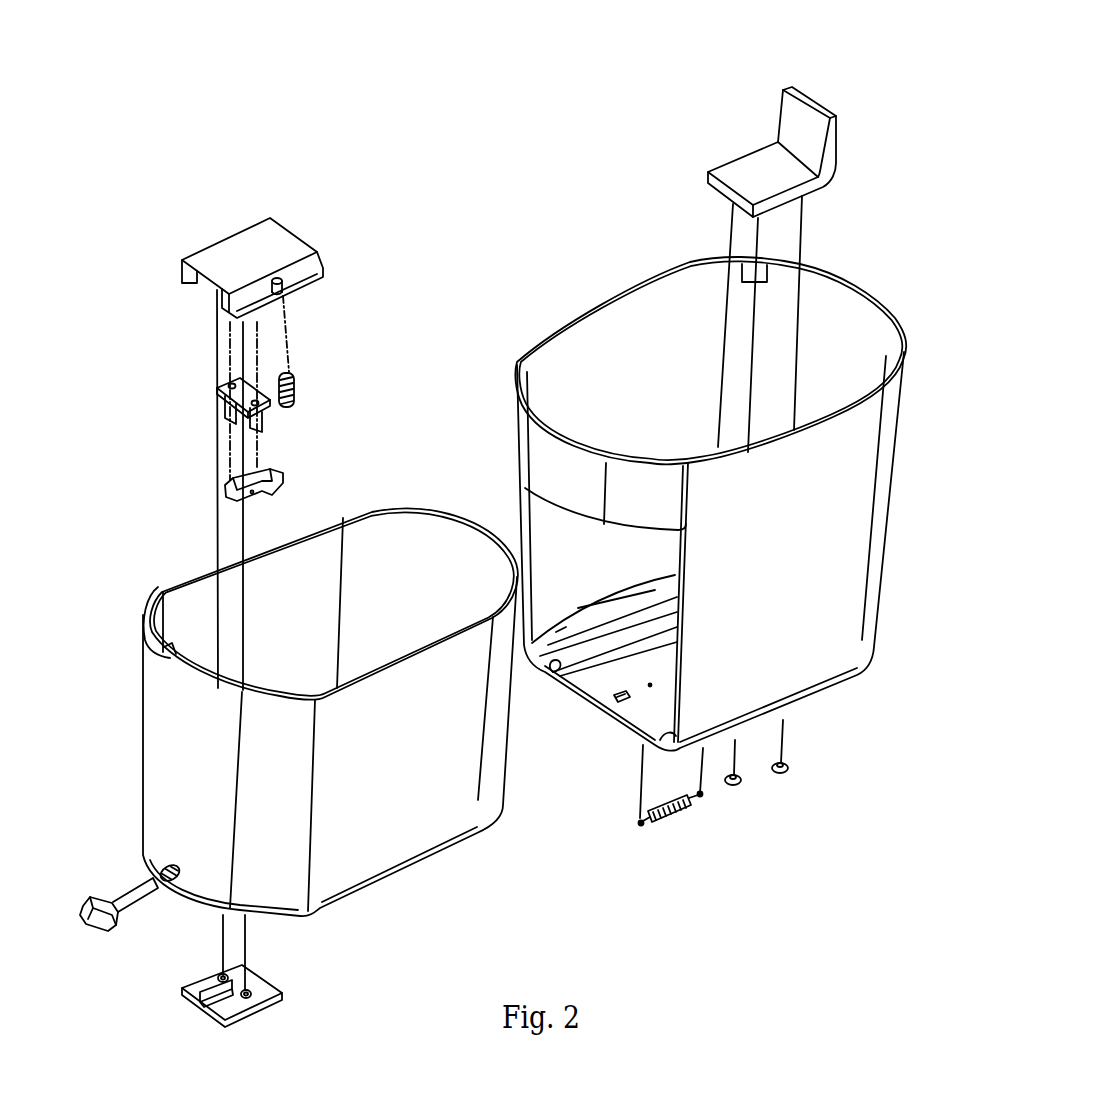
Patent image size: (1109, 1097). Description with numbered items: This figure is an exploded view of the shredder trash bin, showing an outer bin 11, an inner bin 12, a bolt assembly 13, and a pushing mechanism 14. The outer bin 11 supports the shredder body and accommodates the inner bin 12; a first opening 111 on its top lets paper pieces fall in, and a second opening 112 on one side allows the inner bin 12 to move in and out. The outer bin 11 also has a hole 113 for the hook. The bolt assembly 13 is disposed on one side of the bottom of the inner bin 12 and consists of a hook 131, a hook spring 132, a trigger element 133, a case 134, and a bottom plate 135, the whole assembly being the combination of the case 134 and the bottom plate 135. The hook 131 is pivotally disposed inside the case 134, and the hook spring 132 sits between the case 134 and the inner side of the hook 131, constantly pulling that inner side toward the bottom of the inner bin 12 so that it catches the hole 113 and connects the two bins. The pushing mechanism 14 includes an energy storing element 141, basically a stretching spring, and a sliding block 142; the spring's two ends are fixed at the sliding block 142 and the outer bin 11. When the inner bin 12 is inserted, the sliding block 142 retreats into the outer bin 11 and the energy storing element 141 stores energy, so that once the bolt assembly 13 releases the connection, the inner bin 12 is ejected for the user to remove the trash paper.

The outer bin 11 is at (781, 544).
The first opening 111 is at (620, 292).
The second opening 112 is at (545, 522).
The hole 113 is at (619, 704).
The inner bin 12 is at (187, 597).
The bolt assembly 13 is at (339, 213).
The hook 131 is at (286, 481).
The hook spring 132 is at (297, 381).
The trigger element 133 is at (112, 893).
The case 134 is at (222, 241).
The bottom plate 135 is at (284, 992).
The pushing mechanism 14 is at (829, 88).
The energy storing element 141 is at (652, 823).
The sliding block 142 is at (757, 157).